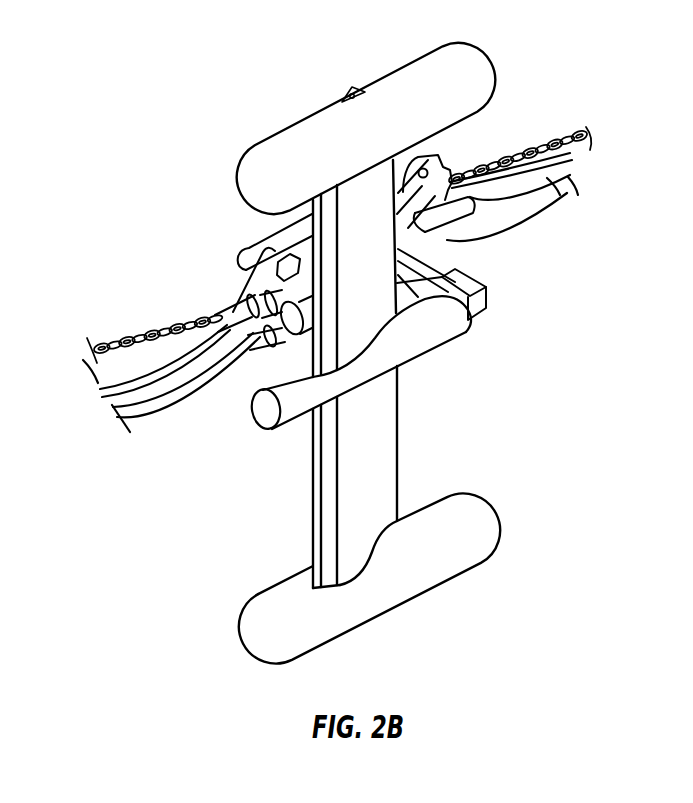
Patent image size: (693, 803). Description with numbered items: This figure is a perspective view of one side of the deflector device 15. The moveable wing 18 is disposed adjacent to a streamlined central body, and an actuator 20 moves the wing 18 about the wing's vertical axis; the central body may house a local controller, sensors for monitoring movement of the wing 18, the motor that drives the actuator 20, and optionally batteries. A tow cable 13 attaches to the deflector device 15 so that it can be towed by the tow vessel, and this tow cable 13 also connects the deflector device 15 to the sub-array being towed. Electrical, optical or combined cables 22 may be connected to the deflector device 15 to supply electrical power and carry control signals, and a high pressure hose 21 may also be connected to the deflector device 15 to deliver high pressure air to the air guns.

The tow cable 13 is at (507, 150).
The deflector device 15 is at (279, 72).
The moveable wing 18 is at (386, 437).
The actuator 20 is at (461, 266).
The high pressure hose 21 is at (512, 232).
The cables 22 is at (553, 182).